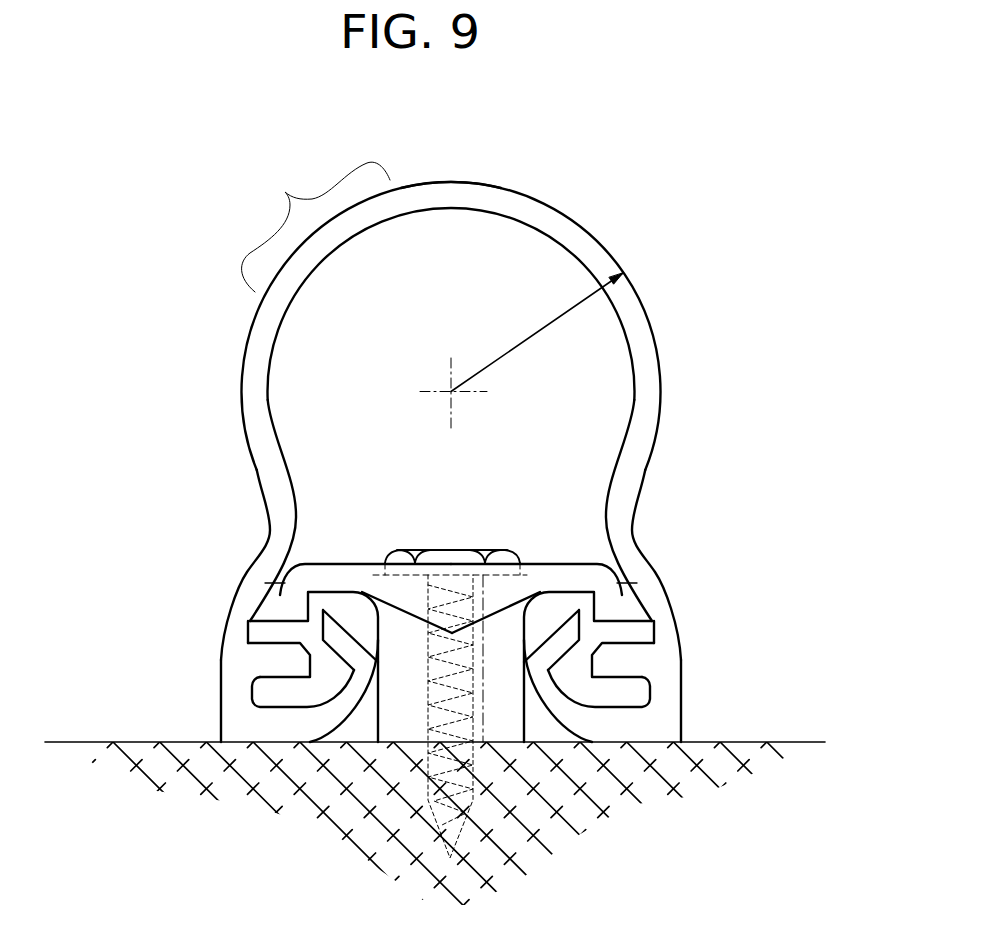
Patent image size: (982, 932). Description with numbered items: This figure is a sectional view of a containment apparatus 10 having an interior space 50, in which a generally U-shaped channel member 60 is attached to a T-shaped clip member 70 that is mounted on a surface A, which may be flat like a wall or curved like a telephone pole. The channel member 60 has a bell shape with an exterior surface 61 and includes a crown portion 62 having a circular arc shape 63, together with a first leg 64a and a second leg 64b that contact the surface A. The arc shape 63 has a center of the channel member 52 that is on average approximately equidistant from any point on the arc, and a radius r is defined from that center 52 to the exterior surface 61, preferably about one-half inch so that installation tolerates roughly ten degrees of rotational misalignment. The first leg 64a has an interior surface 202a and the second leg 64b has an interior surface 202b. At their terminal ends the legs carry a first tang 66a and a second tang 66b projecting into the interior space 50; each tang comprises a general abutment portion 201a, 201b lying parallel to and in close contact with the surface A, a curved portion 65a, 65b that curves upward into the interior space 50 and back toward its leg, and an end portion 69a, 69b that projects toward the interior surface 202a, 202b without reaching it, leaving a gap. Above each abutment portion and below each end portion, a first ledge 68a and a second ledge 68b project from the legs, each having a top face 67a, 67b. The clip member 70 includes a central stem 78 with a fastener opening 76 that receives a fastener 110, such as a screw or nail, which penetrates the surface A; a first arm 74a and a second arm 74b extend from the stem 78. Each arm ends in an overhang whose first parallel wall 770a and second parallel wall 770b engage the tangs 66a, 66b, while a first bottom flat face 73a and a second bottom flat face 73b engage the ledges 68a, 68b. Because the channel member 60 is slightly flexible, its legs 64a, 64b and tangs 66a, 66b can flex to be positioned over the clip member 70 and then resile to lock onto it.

The containment apparatus 10 is at (491, 520).
The interior space 50 is at (420, 335).
The center of the channel member 52 is at (463, 370).
The generally U-shaped channel member 60 is at (635, 283).
The exterior surface 61 is at (612, 253).
The crown portion 62 is at (473, 183).
The circular arc shape 63 is at (316, 226).
The first leg 64a is at (662, 399).
The second leg 64b is at (248, 452).
The first curved portion 65a is at (602, 693).
The second curved portion 65b is at (300, 693).
The first tang 66a is at (562, 746).
The second tang 66b is at (340, 743).
The first top face 67a is at (656, 619).
The second top face 67b is at (246, 619).
The first ledge 68a is at (642, 662).
The second ledge 68b is at (260, 662).
The first end portion 69a is at (564, 647).
The second end portion 69b is at (338, 647).
The T-shaped clip member 70 is at (570, 572).
The first bottom flat face 73a is at (605, 605).
The second bottom flat face 73b is at (295, 605).
The first arm 74a is at (568, 575).
The second arm 74b is at (337, 575).
The fastener opening 76 is at (384, 560).
The central stem 78 is at (507, 740).
The fastener 110 is at (485, 534).
The first general abutment portion 201a is at (645, 738).
The second general abutment portion 201b is at (262, 738).
The interior surface of the first leg 202a is at (625, 445).
The interior surface of the second leg 202b is at (289, 475).
The first parallel wall 770a is at (617, 583).
The second parallel wall 770b is at (283, 583).
The surface A is at (810, 734).